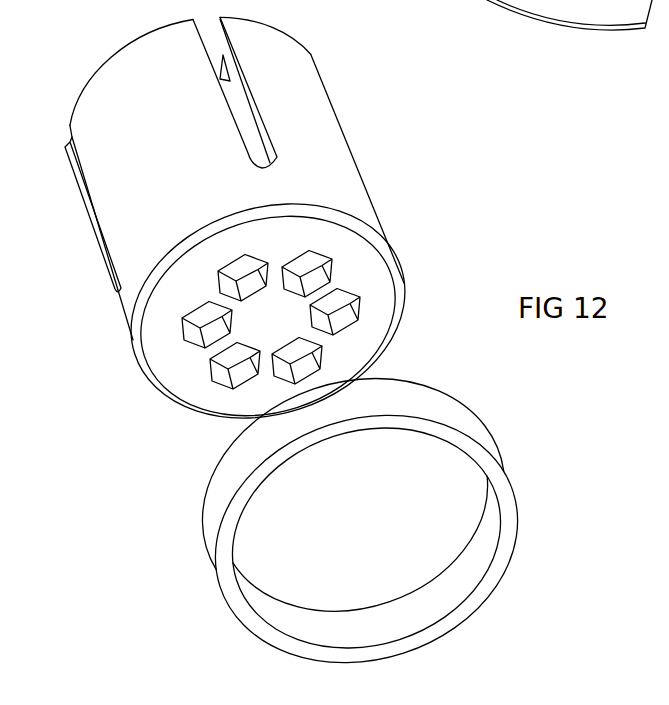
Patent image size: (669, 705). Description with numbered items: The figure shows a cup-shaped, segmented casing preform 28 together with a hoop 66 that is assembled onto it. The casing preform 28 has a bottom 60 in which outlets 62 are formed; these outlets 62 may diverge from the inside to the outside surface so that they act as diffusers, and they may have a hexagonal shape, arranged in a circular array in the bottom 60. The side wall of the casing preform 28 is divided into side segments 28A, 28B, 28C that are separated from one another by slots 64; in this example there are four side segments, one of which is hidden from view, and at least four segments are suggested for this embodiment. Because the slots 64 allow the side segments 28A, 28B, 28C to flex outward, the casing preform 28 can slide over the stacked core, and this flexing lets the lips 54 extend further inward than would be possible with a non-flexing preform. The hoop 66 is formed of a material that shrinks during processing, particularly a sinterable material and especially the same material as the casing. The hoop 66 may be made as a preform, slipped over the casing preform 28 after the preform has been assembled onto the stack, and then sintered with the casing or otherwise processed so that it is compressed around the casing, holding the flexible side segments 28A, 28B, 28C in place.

The casing preform 28 is at (250, 234).
The side segment 28A is at (313, 100).
The side segment 28B is at (172, 128).
The side segment 28C is at (83, 213).
The lip 54 is at (216, 57).
The bottom 60 is at (368, 266).
The outlet 62 is at (358, 306).
The slot 64 is at (212, 104).
The hoop 66 is at (435, 433).